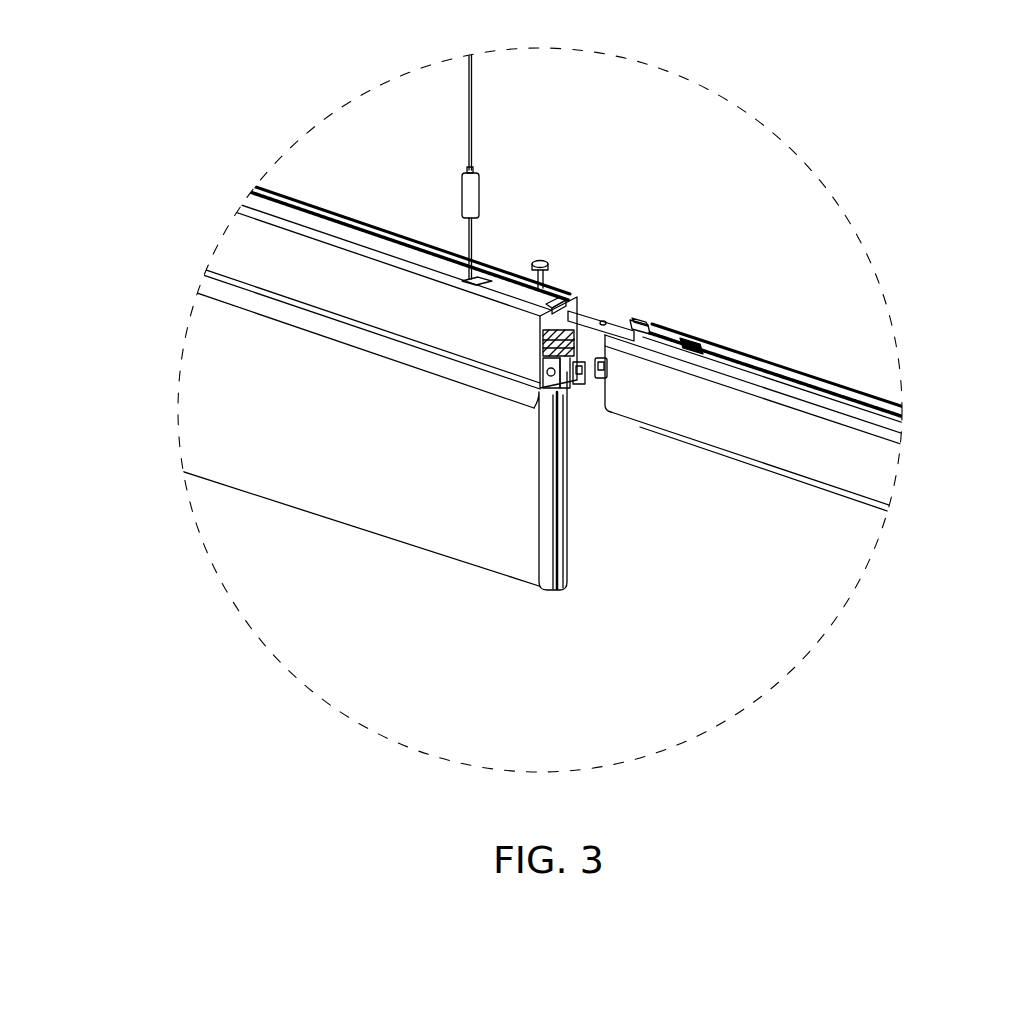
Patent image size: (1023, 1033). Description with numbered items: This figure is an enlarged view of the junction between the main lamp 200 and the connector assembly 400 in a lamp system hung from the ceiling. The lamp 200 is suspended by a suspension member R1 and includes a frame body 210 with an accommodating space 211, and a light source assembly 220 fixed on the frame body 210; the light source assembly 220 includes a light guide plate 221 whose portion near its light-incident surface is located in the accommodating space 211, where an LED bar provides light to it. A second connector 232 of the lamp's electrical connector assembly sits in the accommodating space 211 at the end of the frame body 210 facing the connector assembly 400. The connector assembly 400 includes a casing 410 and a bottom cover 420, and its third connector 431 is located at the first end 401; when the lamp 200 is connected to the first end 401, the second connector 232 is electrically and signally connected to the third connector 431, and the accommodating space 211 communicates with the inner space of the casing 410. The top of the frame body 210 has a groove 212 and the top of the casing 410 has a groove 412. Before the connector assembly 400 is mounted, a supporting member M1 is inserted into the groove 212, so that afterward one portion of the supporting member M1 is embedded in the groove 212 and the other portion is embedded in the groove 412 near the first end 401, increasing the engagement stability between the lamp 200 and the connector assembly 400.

The suspension member R1 is at (473, 112).
The lamp 200 is at (509, 243).
The frame body 210 is at (583, 318).
The groove 212 is at (555, 305).
The supporting member M1 is at (614, 320).
The first end 401 is at (649, 319).
The connector assembly 400 is at (690, 312).
The groove 412 is at (685, 342).
The casing 410 is at (877, 468).
The bottom cover 420 is at (700, 442).
The third connector 431 is at (610, 377).
The second connector 232 is at (547, 360).
The accommodating space 211 is at (578, 386).
The light source assembly 220 is at (568, 405).
The light guide plate 221 is at (405, 522).